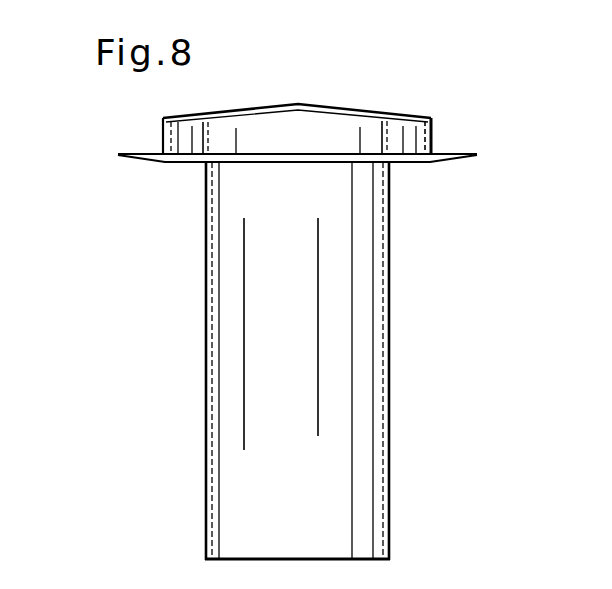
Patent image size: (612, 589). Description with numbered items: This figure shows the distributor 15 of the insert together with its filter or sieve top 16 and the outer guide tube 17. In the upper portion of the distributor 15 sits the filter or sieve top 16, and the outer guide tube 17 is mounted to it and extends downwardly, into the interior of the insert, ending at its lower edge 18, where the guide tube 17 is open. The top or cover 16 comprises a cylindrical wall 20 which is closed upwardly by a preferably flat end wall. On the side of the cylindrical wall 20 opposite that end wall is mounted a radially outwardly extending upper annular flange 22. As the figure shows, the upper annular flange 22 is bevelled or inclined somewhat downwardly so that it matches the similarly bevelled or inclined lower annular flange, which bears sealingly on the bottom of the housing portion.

The distributor 15 is at (176, 348).
The filter or sieve top 16 is at (406, 117).
The outer guide tube 17 is at (384, 337).
The lower edge 18 is at (230, 560).
The cylindrical wall 20 is at (434, 139).
The upper annular flange 22 is at (170, 155).